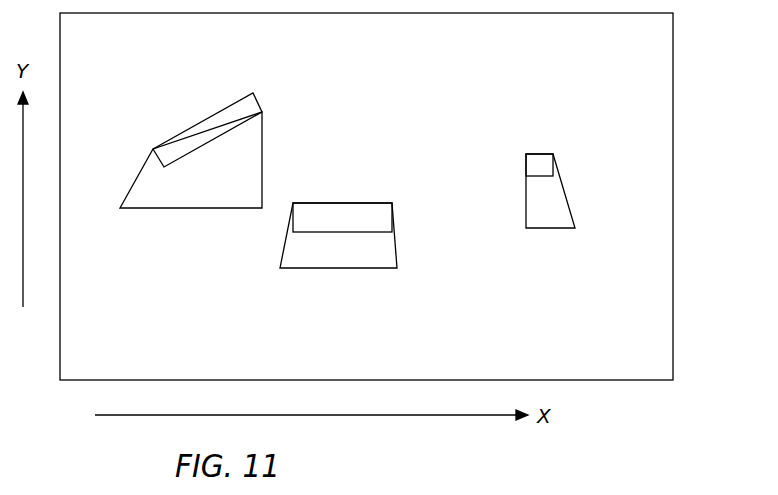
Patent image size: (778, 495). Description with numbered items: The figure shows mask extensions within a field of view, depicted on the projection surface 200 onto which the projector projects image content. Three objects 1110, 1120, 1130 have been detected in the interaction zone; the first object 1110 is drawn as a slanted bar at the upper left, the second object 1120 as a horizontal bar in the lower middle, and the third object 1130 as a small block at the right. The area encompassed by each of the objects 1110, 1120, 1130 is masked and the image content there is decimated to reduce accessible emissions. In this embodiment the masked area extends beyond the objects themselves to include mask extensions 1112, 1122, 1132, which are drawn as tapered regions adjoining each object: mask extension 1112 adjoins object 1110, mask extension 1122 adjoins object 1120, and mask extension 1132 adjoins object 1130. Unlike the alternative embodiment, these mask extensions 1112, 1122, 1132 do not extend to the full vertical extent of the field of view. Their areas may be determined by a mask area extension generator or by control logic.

The projection surface 200 is at (394, 102).
The object 1110 is at (214, 112).
The mask extension 1112 is at (148, 158).
The object 1120 is at (348, 203).
The mask extension 1122 is at (287, 235).
The object 1130 is at (538, 154).
The mask extension 1132 is at (560, 178).